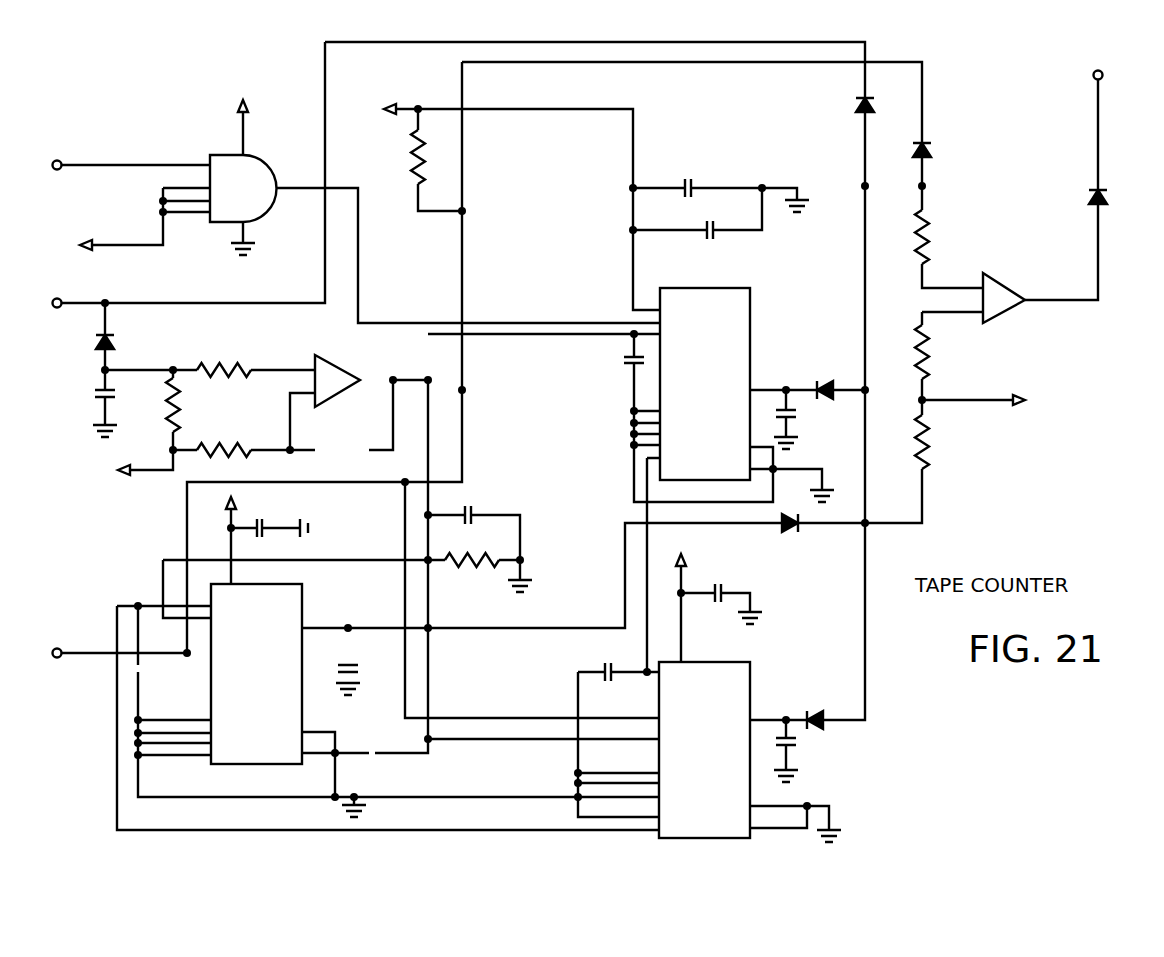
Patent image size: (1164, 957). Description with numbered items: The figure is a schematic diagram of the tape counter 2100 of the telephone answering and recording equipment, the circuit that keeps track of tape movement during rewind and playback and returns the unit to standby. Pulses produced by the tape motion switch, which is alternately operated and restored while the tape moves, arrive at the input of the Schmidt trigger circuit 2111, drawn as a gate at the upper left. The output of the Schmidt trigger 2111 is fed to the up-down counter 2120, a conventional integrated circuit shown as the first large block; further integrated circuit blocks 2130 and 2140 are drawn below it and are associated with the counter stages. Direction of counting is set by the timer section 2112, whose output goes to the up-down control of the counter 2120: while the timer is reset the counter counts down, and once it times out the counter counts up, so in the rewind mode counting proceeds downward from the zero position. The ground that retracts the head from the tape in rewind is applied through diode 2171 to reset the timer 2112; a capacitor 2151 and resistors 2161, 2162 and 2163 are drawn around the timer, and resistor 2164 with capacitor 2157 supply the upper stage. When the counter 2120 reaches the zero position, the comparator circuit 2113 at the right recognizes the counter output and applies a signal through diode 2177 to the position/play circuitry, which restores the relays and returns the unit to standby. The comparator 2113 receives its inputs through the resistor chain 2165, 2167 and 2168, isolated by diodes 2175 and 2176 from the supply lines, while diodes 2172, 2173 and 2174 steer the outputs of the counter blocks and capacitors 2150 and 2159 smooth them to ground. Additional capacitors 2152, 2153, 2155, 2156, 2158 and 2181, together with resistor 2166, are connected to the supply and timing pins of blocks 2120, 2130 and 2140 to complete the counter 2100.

The tape counter 2100 is at (587, 442).
The Schmidt trigger circuit 2111 is at (257, 157).
The timer section 2112 is at (330, 357).
The comparator circuit 2113 is at (1003, 285).
The up-down counter 2120 is at (752, 296).
The integrated circuit 2130 is at (304, 603).
The integrated circuit 2140 is at (752, 673).
The capacitor 2150 is at (792, 742).
The capacitor 2151 is at (122, 388).
The capacitor 2152 is at (262, 525).
The capacitor 2153 is at (352, 662).
The capacitor 2155 is at (630, 364).
The capacitor 2156 is at (600, 672).
The capacitor 2157 is at (714, 234).
The capacitor 2158 is at (722, 593).
The capacitor 2159 is at (792, 414).
The resistor 2161 is at (182, 403).
The resistor 2162 is at (208, 363).
The resistor 2163 is at (238, 455).
The resistor 2164 is at (403, 150).
The resistor 2165 is at (930, 235).
The resistor 2166 is at (450, 566).
The resistor 2167 is at (930, 360).
The resistor 2168 is at (930, 440).
The diode 2171 is at (112, 343).
The diode 2172 is at (790, 532).
The diode 2173 is at (813, 711).
The diode 2174 is at (828, 380).
The diode 2175 is at (930, 150).
The diode 2176 is at (855, 105).
The diode 2177 is at (1090, 197).
The capacitor 2181 is at (474, 518).